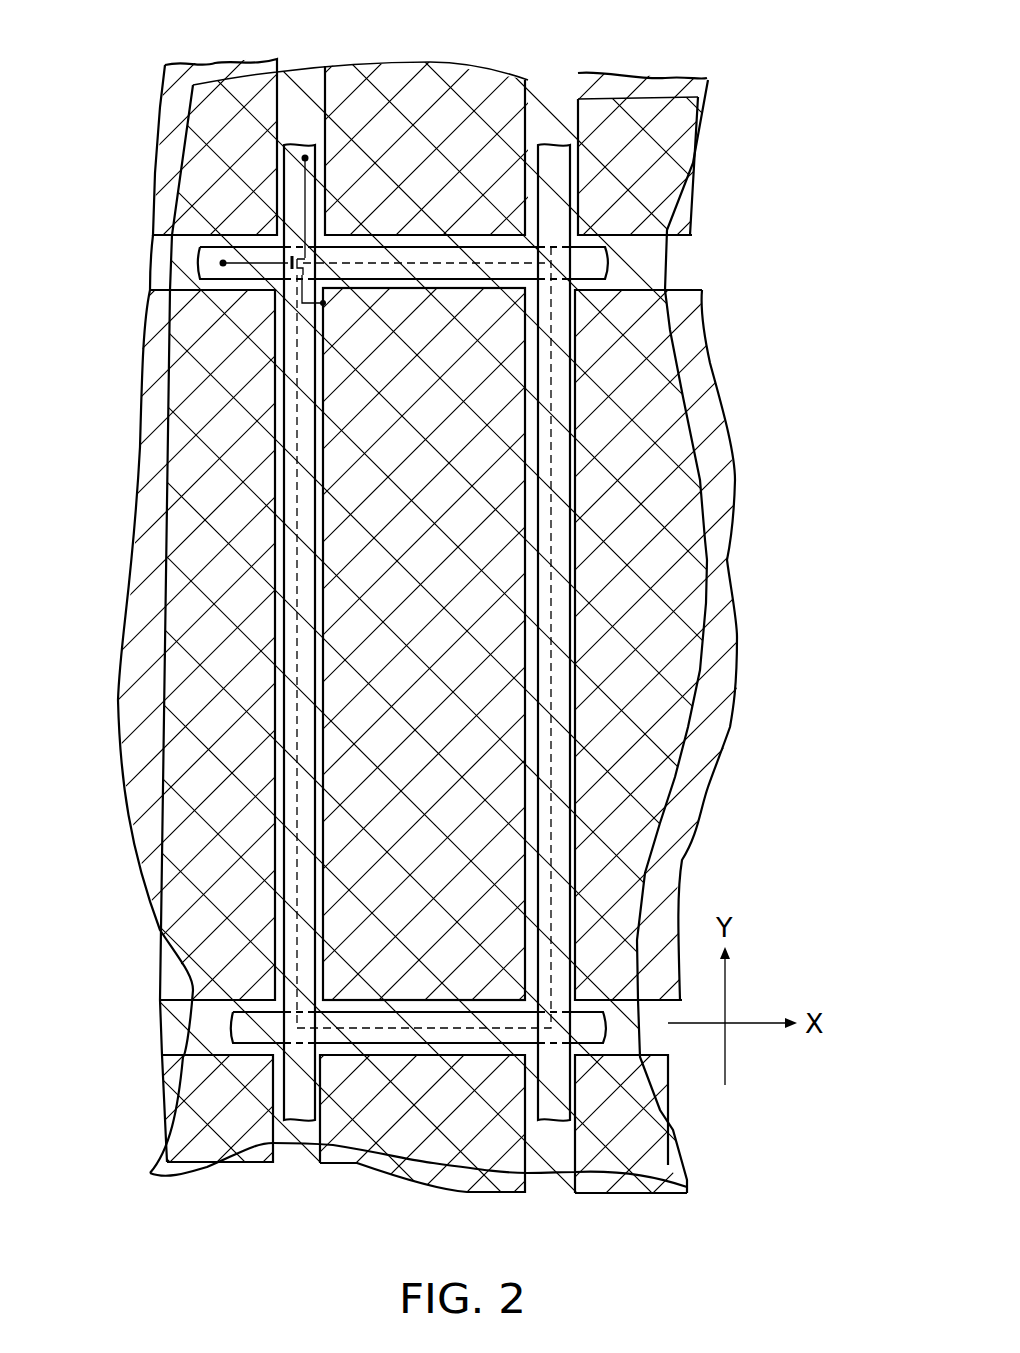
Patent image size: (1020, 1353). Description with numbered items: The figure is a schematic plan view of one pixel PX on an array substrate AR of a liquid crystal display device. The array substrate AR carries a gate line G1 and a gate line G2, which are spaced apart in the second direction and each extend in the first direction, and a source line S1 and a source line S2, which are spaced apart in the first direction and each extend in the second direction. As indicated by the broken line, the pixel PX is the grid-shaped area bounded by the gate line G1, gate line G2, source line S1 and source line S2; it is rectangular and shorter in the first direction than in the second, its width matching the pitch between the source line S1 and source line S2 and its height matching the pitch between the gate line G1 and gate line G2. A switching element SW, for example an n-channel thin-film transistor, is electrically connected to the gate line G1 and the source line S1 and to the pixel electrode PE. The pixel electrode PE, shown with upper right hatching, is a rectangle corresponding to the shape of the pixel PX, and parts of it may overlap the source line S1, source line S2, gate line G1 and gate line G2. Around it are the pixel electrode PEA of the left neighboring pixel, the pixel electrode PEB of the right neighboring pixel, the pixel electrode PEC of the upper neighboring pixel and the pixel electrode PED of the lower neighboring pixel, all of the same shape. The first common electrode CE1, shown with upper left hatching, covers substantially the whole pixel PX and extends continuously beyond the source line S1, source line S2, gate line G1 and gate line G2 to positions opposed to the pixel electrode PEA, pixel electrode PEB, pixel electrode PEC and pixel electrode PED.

The pixel PX is at (568, 257).
The pixel electrode PE is at (500, 412).
The pixel electrode PEA is at (138, 513).
The pixel electrode PEB is at (708, 790).
The pixel electrode PEC is at (436, 63).
The pixel electrode PED is at (358, 1163).
The first common electrode CE1 is at (707, 527).
The gate line G1 is at (200, 260).
The gate line G2 is at (232, 1030).
The source line S1 is at (305, 156).
The source line S2 is at (556, 144).
The switching element SW is at (291, 288).
The array substrate AR is at (695, 249).